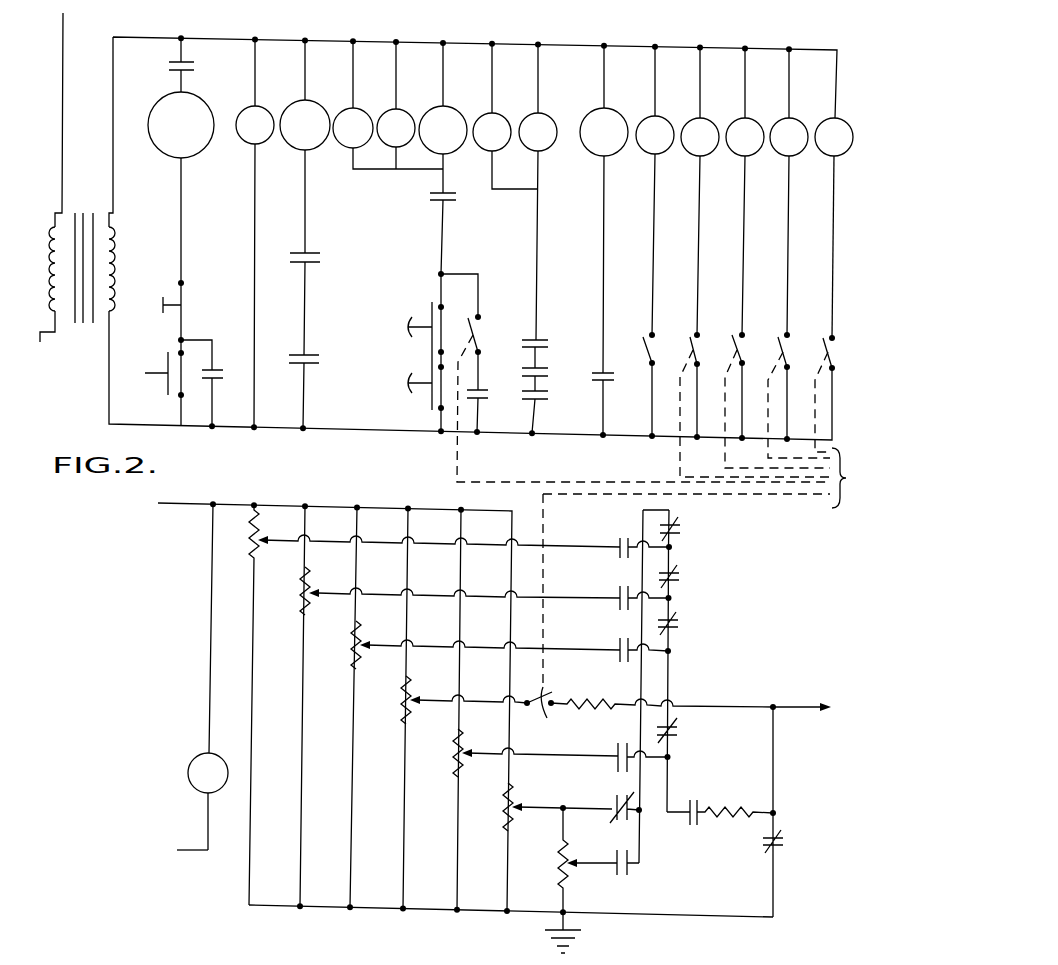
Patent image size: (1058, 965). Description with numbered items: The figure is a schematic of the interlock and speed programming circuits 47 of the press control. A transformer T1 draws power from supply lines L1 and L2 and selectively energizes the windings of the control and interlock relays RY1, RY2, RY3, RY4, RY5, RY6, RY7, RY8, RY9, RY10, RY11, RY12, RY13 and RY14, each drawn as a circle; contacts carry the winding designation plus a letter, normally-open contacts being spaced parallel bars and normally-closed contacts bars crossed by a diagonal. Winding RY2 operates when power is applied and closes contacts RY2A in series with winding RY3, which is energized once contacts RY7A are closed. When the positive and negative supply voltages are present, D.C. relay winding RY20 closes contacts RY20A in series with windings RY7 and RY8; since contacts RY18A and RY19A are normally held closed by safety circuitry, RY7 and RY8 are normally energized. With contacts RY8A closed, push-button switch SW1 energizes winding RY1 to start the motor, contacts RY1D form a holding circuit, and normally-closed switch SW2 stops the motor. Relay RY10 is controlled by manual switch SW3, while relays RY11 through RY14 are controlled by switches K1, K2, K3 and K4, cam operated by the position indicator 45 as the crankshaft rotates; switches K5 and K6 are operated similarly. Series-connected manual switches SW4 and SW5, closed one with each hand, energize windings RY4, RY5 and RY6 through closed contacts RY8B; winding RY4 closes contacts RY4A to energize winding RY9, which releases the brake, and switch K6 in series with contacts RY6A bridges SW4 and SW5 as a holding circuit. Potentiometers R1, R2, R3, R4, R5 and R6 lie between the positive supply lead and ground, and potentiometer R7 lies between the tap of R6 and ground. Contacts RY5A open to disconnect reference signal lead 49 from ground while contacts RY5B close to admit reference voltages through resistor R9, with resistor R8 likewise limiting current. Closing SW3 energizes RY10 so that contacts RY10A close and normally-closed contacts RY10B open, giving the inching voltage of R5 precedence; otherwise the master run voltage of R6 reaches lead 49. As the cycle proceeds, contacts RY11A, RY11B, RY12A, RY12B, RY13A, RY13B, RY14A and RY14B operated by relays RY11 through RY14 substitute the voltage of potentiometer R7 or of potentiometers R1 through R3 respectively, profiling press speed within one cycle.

The transformer T1 is at (88, 203).
The supply line L1 is at (43, 347).
The supply line L2 is at (62, 163).
The relay winding RY1 is at (193, 157).
The relay winding RY2 is at (260, 147).
The relay winding RY3 is at (315, 152).
The relay winding RY4 is at (340, 110).
The relay winding RY5 is at (385, 110).
The relay winding RY6 is at (432, 108).
The relay winding RY7 is at (482, 115).
The relay winding RY8 is at (548, 117).
The relay winding RY9 is at (592, 152).
The relay winding RY10 is at (648, 118).
The relay winding RY11 is at (690, 156).
The relay winding RY12 is at (735, 120).
The relay winding RY13 is at (782, 156).
The relay winding RY14 is at (826, 120).
The D.C. operated relay winding RY20 is at (190, 771).
The relay contacts RY8A is at (168, 58).
The relay contacts RY8B is at (444, 203).
The relay contacts RY1D is at (218, 367).
The relay contacts RY7A is at (312, 252).
The relay contacts RY2A is at (312, 367).
The normally-open relay contacts RY6A is at (481, 401).
The relay contacts RY20A is at (536, 338).
The relay contacts RY19A is at (545, 366).
The relay contacts RY18A is at (543, 402).
The relay contacts RY4A is at (606, 383).
The relay contact RY12A is at (617, 540).
The relay contact RY13A is at (617, 592).
The relay contact RY14A is at (617, 644).
The relay contact RY12B is at (683, 530).
The relay contact RY13B is at (683, 582).
The relay contact RY14B is at (683, 632).
The relay contacts RY10A is at (617, 766).
The normally-closed relay contacts RY10B is at (680, 738).
The relay contact RY11A is at (628, 878).
The relay contact RY11B is at (628, 818).
The normally-closed relay contacts RY5A is at (780, 848).
The relay contacts RY5B is at (702, 810).
The push-button switch SW1 is at (147, 373).
The normally-closed manual switch SW2 is at (165, 302).
The manual switch SW3 is at (640, 338).
The manually operable switch SW4 is at (425, 317).
The manually operable switch SW5 is at (420, 383).
The position indicator switch K1 is at (686, 338).
The position indicator switch K2 is at (737, 350).
The position indicator switch K3 is at (783, 352).
The position indicator switch K4 is at (828, 355).
The position indicator switch K5 is at (623, 623).
The position indicator switch K6 is at (471, 338).
The potentiometer R1 is at (251, 543).
The potentiometer R2 is at (302, 597).
The potentiometer R3 is at (352, 650).
The potentiometer R4 is at (403, 698).
The potentiometer R5 is at (455, 746).
The potentiometer R6 is at (505, 826).
The potentiometer R7 is at (561, 887).
The resistor R8 is at (613, 681).
The resistor R9 is at (735, 815).
The position indicator 45 is at (851, 476).
The interlock and programming circuits 47 is at (354, 475).
The reference signal lead 49 is at (820, 675).